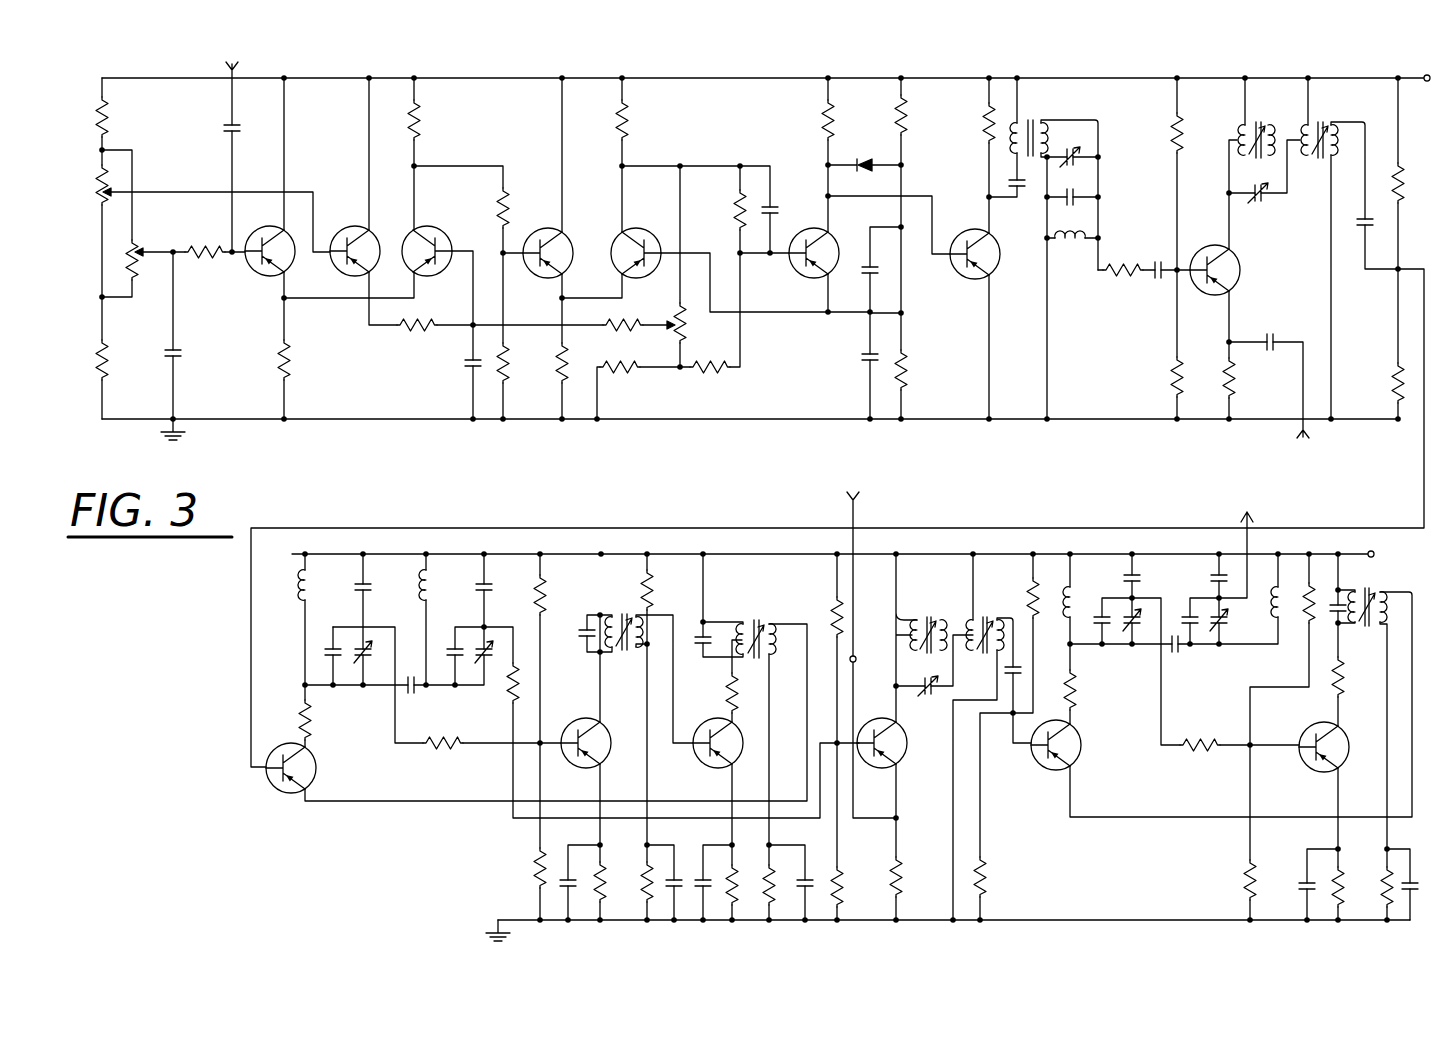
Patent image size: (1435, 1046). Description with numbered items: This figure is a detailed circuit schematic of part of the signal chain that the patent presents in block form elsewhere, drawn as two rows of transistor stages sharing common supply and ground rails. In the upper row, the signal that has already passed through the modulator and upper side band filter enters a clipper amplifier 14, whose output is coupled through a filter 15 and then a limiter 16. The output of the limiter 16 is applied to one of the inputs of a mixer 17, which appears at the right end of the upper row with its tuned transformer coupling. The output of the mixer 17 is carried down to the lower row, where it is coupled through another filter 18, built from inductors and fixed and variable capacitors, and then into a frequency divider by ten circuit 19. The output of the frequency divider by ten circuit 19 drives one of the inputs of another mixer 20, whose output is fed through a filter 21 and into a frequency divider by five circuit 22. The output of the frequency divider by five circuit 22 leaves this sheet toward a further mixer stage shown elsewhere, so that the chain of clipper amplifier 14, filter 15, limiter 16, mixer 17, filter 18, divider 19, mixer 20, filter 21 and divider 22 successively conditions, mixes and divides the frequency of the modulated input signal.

The clipper amplifier 14 is at (372, 66).
The filter 15 is at (716, 68).
The limiter 16 is at (993, 67).
The mixer 17 is at (1162, 116).
The filter 18 is at (362, 542).
The frequency divider by 10 circuit 19 is at (609, 545).
The mixer 20 is at (897, 542).
The filter 21 is at (1110, 542).
The frequency divider by five circuit 22 is at (1322, 545).